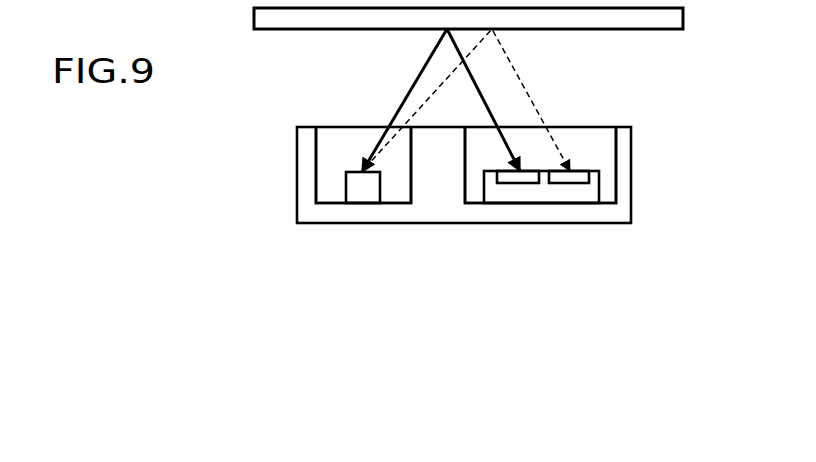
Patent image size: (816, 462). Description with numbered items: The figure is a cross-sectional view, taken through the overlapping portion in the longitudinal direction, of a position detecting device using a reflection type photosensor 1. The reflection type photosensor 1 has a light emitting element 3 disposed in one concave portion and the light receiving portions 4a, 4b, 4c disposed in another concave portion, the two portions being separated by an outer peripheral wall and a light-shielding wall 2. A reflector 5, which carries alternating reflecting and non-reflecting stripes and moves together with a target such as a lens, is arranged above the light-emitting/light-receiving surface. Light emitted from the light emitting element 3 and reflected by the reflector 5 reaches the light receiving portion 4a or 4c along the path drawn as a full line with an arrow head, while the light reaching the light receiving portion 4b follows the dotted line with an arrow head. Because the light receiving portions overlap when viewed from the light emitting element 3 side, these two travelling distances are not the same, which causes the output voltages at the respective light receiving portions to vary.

The reflection type photosensor 1 is at (300, 163).
The light-shielding wall 2 is at (430, 199).
The light emitting element 3 is at (360, 193).
The light receiving portion 4a is at (517, 179).
The light receiving portion 4b is at (570, 179).
The light receiving portion 4c is at (541, 187).
The reflector 5 is at (283, 28).